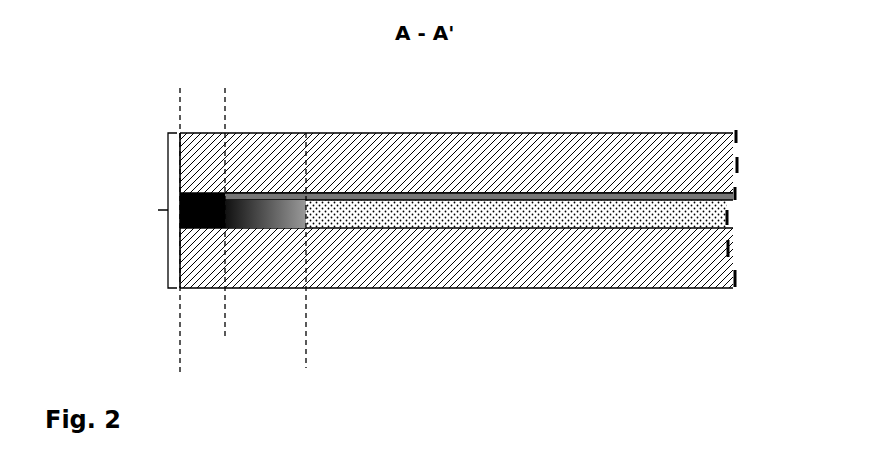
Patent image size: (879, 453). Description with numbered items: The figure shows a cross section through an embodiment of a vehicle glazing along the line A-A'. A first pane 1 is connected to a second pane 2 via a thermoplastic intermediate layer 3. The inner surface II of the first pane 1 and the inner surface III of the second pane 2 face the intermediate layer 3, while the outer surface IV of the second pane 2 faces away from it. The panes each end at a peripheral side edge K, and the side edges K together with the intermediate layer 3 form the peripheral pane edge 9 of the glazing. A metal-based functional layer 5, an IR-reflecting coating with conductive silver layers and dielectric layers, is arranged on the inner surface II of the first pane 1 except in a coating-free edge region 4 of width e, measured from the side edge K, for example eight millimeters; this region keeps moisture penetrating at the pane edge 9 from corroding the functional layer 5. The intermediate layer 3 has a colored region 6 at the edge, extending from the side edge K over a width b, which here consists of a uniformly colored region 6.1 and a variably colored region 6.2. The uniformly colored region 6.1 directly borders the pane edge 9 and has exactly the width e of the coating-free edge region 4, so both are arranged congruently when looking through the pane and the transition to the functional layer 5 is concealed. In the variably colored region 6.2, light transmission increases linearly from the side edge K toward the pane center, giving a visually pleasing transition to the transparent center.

The first pane 1 is at (647, 155).
The second pane 2 is at (571, 262).
The thermoplastic intermediate layer 3 is at (676, 211).
The coating-free edge region 4 is at (213, 120).
The metal-based functional layer 5 is at (513, 195).
The colored region 6 is at (200, 120).
The uniformly colored region 6.1 is at (202, 210).
The variably colored region 6.2 is at (306, 133).
The pane edge 9 is at (157, 210).
The side edge K is at (178, 147).
The width of the coating-free edge region e is at (255, 321).
The width of the colored region b is at (306, 367).
The inner surface of the first pane II is at (430, 190).
The inner surface of the second pane III is at (406, 228).
The outer surface of the second pane IV is at (520, 289).